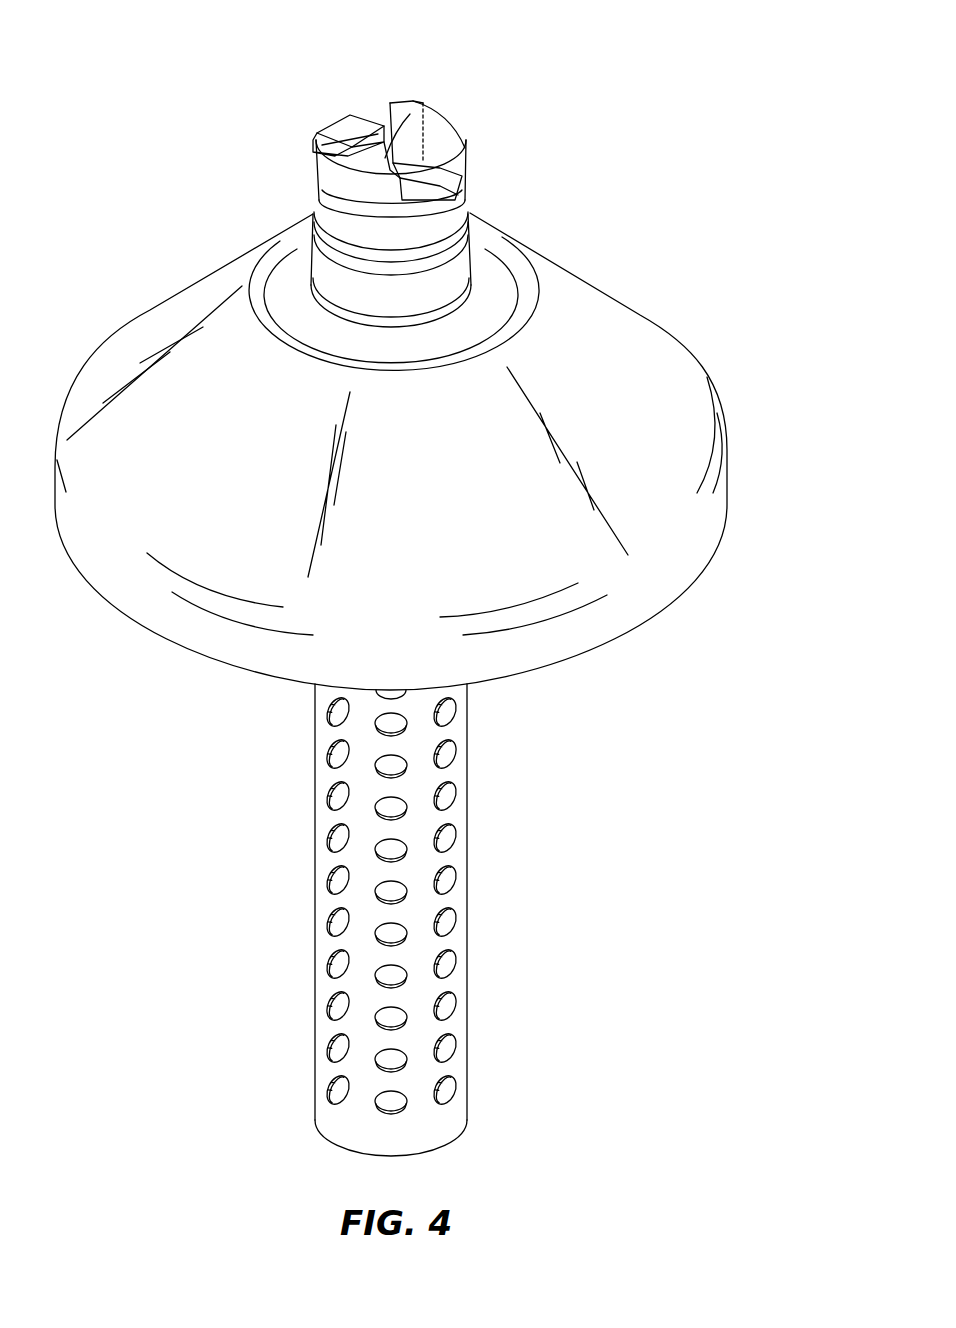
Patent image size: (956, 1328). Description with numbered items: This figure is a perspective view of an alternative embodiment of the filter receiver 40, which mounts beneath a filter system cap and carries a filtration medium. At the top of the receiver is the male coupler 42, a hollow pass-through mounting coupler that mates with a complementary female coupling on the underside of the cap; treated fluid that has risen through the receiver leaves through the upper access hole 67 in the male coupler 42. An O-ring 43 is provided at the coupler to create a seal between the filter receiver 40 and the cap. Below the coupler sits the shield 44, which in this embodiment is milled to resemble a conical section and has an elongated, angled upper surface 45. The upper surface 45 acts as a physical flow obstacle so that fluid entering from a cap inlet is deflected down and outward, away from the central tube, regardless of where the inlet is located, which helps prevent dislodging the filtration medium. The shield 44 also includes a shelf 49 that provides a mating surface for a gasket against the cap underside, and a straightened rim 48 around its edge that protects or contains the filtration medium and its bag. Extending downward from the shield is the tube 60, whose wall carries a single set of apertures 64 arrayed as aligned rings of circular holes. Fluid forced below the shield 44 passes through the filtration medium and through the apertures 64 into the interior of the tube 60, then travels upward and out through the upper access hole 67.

The filter receiver 40 is at (166, 92).
The male coupler 42 is at (470, 172).
The upper access hole 67 is at (375, 113).
The O-ring 43 is at (462, 213).
The shelf 49 is at (274, 275).
The shield 44 is at (667, 337).
The upper surface 45 is at (477, 485).
The straightened rim 48 is at (730, 478).
The tube 60 is at (486, 835).
The apertures 64 is at (447, 875).